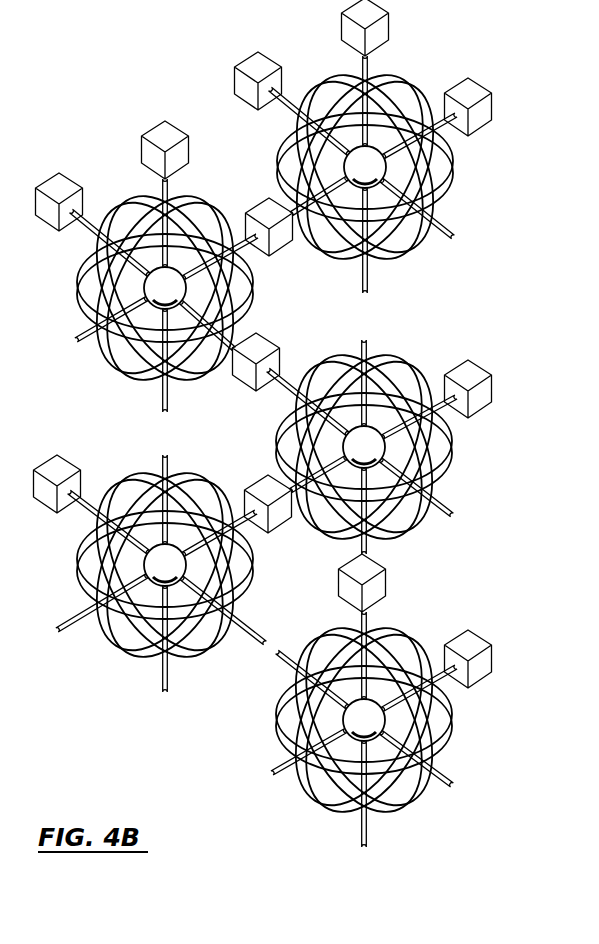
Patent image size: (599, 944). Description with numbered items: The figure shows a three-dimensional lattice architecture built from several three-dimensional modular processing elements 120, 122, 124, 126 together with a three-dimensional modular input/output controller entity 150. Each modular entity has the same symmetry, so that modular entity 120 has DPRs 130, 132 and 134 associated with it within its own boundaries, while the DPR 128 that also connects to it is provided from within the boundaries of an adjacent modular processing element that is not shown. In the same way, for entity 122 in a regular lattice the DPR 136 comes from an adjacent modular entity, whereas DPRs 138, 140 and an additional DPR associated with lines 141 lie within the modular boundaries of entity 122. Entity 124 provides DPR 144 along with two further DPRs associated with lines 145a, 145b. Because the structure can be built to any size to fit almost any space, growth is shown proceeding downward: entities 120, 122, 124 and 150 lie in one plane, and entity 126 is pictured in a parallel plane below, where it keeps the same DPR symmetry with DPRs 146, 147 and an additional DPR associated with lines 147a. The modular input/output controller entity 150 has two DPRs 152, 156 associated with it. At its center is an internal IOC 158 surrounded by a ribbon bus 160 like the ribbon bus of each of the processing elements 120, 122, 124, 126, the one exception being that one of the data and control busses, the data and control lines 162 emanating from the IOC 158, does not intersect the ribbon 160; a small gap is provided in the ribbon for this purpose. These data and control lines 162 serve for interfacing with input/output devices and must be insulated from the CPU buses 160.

The three-dimensional modular processing element 120 is at (165, 266).
The three-dimensional modular processing element 122 is at (376, 156).
The three-dimensional modular processing element 124 is at (379, 440).
The three-dimensional modular processing element 126 is at (380, 724).
The DPR 128 is at (56, 176).
The DPR 130 is at (158, 123).
The DPR 132 is at (251, 333).
The DPR 134 is at (263, 202).
The DPR 136 is at (254, 55).
The DPR 138 is at (482, 92).
The DPR 140 is at (390, 21).
The lines 141 is at (443, 221).
The DPR 144 is at (476, 366).
The lines 145a is at (368, 352).
The lines 145b is at (442, 498).
The DPR 146 is at (381, 582).
The DPR 147 is at (455, 640).
The lines 147a is at (444, 771).
The three-dimensional modular input/output controller entity 150 is at (157, 558).
The DPR 152 is at (52, 458).
The DPR 156 is at (259, 488).
The internal IOC 158 is at (166, 549).
The ribbon bus 160 is at (177, 478).
The data and control lines 162 is at (84, 612).